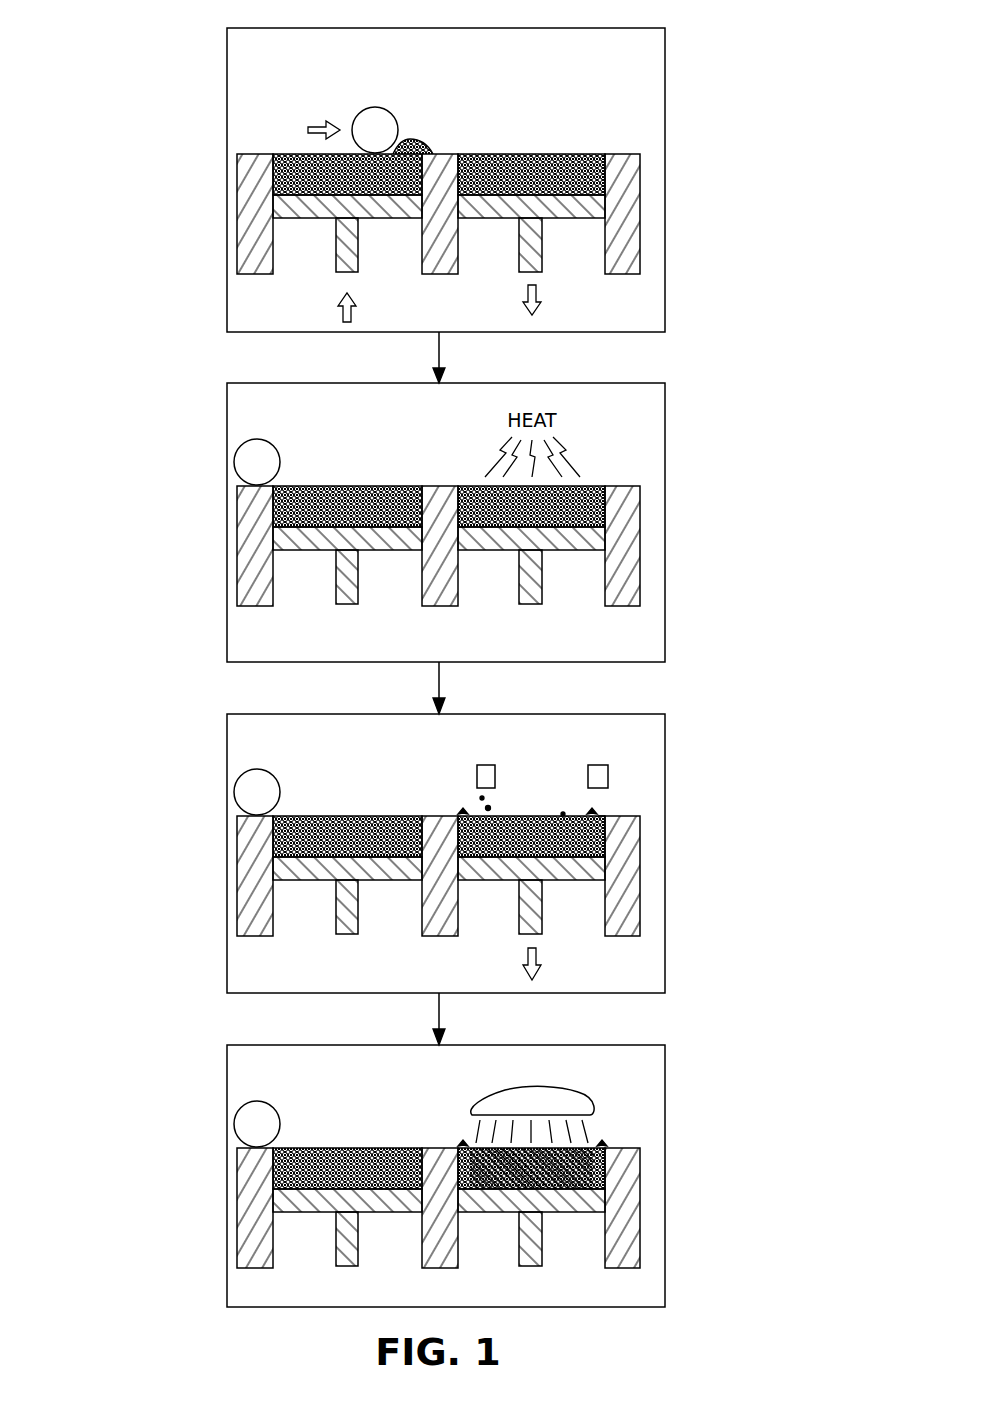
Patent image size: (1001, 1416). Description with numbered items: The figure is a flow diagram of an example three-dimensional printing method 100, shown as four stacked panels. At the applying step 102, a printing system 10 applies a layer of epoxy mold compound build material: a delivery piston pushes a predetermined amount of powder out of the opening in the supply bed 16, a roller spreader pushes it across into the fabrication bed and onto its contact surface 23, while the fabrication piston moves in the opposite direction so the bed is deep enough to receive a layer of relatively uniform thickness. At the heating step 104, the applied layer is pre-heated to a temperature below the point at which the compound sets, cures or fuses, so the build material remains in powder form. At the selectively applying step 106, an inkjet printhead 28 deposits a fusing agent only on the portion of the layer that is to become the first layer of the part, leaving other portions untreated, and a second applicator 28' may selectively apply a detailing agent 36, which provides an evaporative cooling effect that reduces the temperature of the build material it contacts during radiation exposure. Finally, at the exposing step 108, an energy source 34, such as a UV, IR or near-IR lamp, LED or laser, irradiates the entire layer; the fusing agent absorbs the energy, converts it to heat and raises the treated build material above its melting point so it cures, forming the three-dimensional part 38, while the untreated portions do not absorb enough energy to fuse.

The 3D printing method 100 is at (130, 70).
The printing system 10 is at (343, 78).
The supply bed 16 is at (275, 155).
The contact surface 23 is at (604, 186).
The inkjet printhead 28 is at (510, 756).
The applicator 28' is at (619, 758).
The energy source 34 is at (532, 1096).
The detailing agent 36 is at (600, 811).
The 3D part 38 is at (499, 1138).
The applying step 102 is at (665, 178).
The heating step 104 is at (665, 520).
The selectively applying step 106 is at (665, 852).
The exposing step 108 is at (665, 1183).